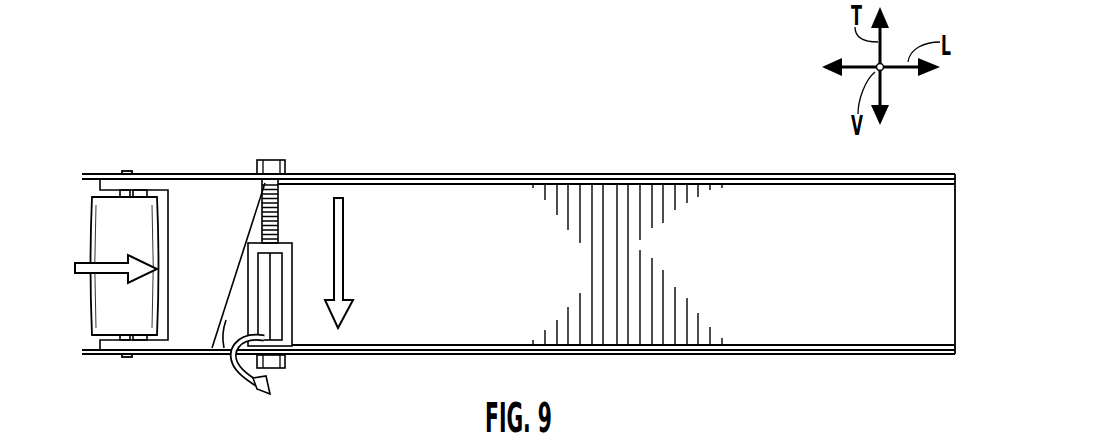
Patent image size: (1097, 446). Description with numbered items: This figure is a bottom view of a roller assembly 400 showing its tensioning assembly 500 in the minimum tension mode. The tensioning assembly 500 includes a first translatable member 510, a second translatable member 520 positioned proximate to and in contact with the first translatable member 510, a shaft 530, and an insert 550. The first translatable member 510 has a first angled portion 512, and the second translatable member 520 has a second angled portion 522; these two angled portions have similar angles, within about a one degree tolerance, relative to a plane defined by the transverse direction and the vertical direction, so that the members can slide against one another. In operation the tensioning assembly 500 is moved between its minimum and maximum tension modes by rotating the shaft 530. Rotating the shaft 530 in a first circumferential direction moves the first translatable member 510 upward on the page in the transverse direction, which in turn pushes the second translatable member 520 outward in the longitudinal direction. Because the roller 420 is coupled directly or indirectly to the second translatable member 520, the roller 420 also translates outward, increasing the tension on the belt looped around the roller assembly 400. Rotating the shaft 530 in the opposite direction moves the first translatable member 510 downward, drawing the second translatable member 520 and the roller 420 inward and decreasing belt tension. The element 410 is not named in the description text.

The roller assembly 400 is at (529, 84).
The frame rail 410 is at (785, 190).
The roller 420 is at (97, 232).
The tensioning assembly 500 is at (300, 195).
The first translatable member 510 is at (296, 330).
The first angled portion 512 is at (238, 258).
The second translatable member 520 is at (196, 347).
The second angled portion 522 is at (227, 322).
The shaft 530 is at (280, 190).
The insert 550 is at (275, 278).